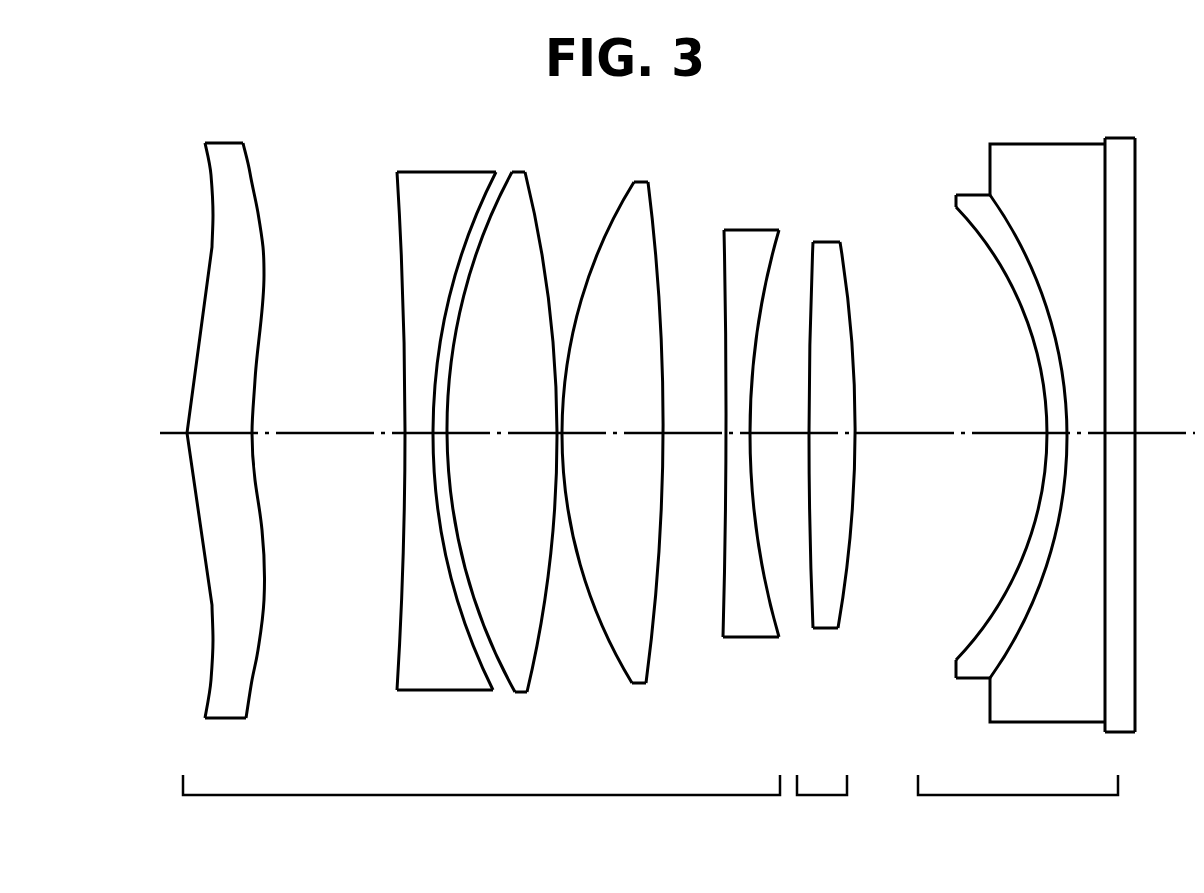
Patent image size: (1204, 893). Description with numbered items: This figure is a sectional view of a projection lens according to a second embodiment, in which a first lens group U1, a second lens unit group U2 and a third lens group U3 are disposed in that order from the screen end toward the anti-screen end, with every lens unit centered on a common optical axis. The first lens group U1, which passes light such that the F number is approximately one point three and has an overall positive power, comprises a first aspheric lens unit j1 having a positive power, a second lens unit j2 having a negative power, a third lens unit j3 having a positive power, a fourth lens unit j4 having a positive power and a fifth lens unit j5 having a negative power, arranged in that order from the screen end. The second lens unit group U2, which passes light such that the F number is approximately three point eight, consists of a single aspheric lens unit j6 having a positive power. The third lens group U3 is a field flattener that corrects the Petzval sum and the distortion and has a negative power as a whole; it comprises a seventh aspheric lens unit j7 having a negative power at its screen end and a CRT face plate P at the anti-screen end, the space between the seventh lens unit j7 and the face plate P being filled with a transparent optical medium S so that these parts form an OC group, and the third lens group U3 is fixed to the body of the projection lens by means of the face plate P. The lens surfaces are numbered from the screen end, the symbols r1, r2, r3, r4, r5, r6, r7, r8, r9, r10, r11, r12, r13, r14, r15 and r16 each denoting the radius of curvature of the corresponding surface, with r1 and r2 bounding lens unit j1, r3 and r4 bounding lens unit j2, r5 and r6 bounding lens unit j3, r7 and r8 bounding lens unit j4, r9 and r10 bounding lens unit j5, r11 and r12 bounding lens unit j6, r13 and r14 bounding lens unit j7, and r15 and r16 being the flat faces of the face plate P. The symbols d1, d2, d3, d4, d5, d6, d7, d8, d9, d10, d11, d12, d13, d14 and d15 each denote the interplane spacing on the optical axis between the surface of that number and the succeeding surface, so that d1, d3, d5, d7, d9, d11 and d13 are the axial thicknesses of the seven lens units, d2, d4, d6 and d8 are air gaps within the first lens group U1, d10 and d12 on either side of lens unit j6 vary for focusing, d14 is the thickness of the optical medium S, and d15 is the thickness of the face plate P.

The radius of curvature of first lens surface r1 is at (198, 410).
The radius of curvature of second lens surface r2 is at (248, 410).
The radius of curvature of third lens surface r3 is at (390, 410).
The radius of curvature of fourth lens surface r4 is at (464, 410).
The radius of curvature of fifth lens surface r5 is at (483, 400).
The radius of curvature of sixth lens surface r6 is at (542, 400).
The radius of curvature of seventh lens surface r7 is at (598, 413).
The radius of curvature of eighth lens surface r8 is at (661, 413).
The radius of curvature of ninth lens surface r9 is at (713, 413).
The radius of curvature of tenth lens surface r10 is at (767, 413).
The radius of curvature of eleventh lens surface r11 is at (813, 414).
The radius of curvature of twelfth lens surface r12 is at (858, 419).
The radius of curvature of thirteenth lens surface r13 is at (984, 409).
The radius of curvature of fourteenth lens surface r14 is at (1018, 389).
The radius of curvature of fifteenth surface r15 is at (1093, 415).
The radius of curvature of sixteenth surface r16 is at (1146, 415).
The first interplane spacing d1 is at (223, 455).
The second interplane spacing d2 is at (307, 453).
The third interplane spacing d3 is at (410, 437).
The fourth interplane spacing d4 is at (437, 431).
The fifth interplane spacing d5 is at (504, 455).
The sixth interplane spacing d6 is at (560, 431).
The seventh interplane spacing d7 is at (610, 455).
The eighth interplane spacing d8 is at (690, 455).
The ninth interplane spacing d9 is at (742, 431).
The tenth interplane spacing d10 is at (783, 453).
The eleventh interplane spacing d11 is at (830, 431).
The twelfth interplane spacing d12 is at (925, 453).
The thirteenth interplane spacing d13 is at (1052, 437).
The fourteenth interplane spacing d14 is at (1087, 431).
The fifteenth interplane spacing d15 is at (1135, 437).
The first aspheric lens unit j1 is at (223, 434).
The second lens unit j2 is at (435, 442).
The third lens unit j3 is at (503, 430).
The fourth lens unit j4 is at (619, 432).
The fifth lens unit j5 is at (742, 442).
The aspheric lens unit j6 is at (839, 448).
The seventh aspheric lens unit j7 is at (1013, 434).
The transparent optical medium S is at (1030, 456).
The CRT face plate P is at (1119, 434).
The first lens group U1 is at (481, 805).
The second lens unit group U2 is at (822, 805).
The third lens group U3 is at (1018, 805).